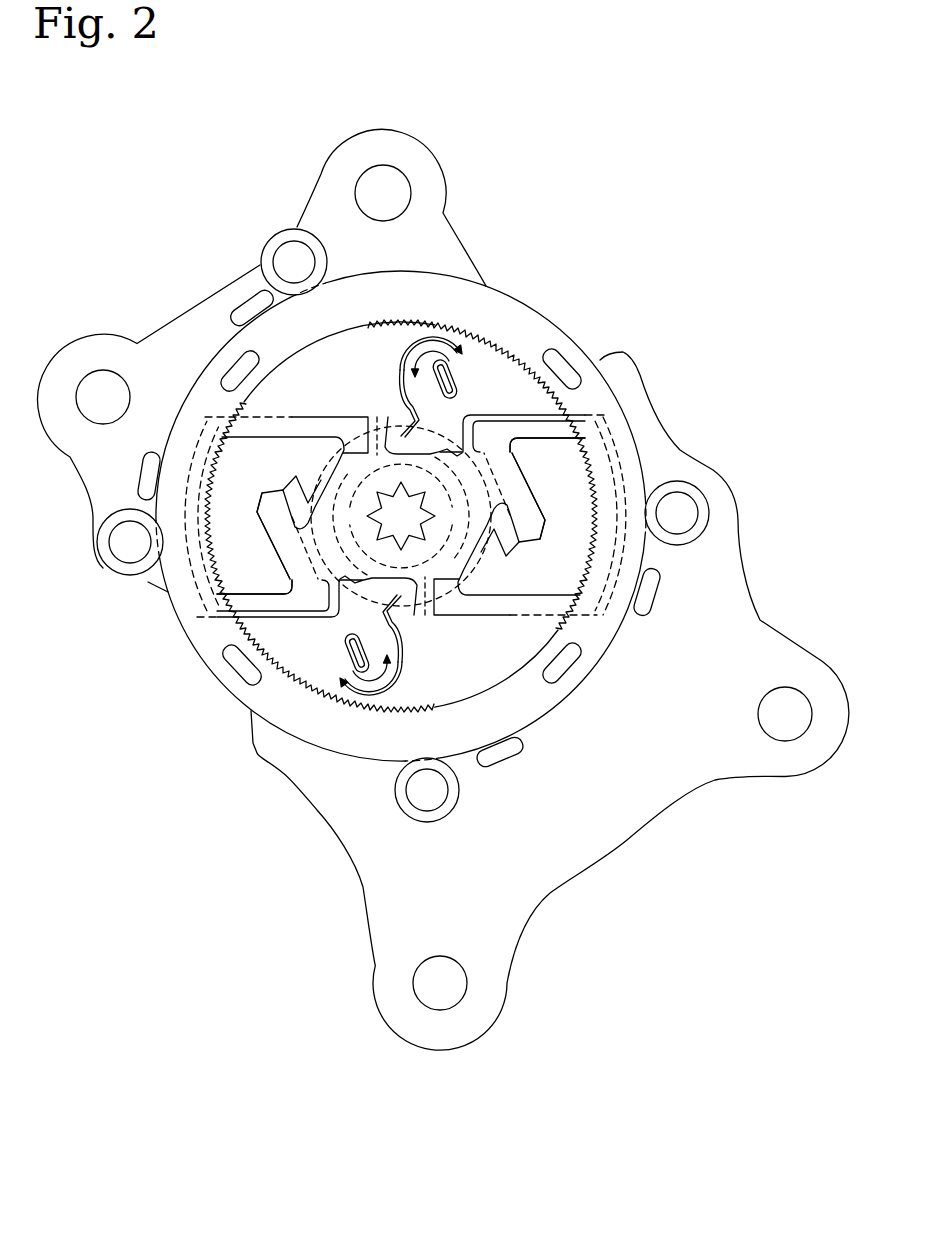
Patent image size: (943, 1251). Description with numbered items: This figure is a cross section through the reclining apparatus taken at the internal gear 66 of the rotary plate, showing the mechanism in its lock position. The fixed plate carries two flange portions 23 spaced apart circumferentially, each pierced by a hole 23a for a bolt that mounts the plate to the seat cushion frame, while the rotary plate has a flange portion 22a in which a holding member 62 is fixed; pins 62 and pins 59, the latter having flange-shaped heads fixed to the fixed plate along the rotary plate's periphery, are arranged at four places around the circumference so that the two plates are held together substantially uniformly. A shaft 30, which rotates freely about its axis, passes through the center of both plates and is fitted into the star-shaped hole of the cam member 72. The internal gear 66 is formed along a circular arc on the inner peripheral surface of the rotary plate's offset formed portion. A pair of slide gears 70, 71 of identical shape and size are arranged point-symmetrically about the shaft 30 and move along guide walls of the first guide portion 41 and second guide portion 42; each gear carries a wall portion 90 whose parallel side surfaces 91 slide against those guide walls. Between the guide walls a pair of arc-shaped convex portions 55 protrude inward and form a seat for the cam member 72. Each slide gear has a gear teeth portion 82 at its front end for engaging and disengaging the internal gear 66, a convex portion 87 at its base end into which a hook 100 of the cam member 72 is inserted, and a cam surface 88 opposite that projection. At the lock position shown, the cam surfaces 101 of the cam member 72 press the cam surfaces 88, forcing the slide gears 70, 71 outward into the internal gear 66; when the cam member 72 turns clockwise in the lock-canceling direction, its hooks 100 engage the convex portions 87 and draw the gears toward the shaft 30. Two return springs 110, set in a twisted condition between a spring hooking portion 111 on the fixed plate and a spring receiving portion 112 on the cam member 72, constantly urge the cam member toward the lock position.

The flange portion 22a is at (320, 180).
The flange portion 23 is at (500, 1013).
The hole 23a is at (433, 997).
The shaft 30 is at (465, 555).
The first guide portion 41 is at (430, 619).
The second guide portion 42 is at (372, 413).
The convex portion 55 is at (410, 515).
The pin 59 is at (709, 503).
The holding member 62 is at (283, 237).
The internal gear 66 is at (383, 323).
The slide gear 70 is at (573, 567).
The slide gear 71 is at (230, 485).
The cam member 72 is at (258, 527).
The gear teeth portion 82 is at (180, 607).
The convex portion 87 is at (306, 490).
The cam surface 88 is at (283, 587).
The wall portion 90 is at (235, 645).
The side surface 91 is at (297, 414).
The hook 100 is at (272, 480).
The cam surface 101 is at (283, 563).
The return spring 110 is at (440, 335).
The spring hooking portion 111 is at (458, 372).
The spring receiving portion 112 is at (395, 420).